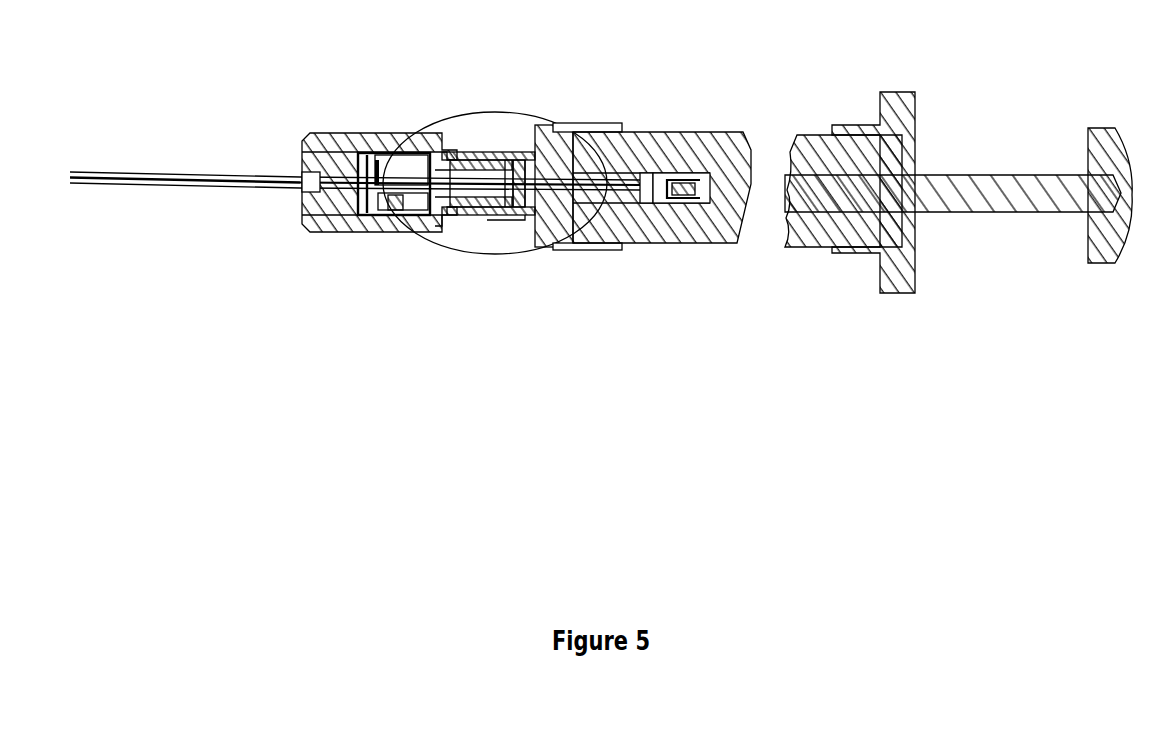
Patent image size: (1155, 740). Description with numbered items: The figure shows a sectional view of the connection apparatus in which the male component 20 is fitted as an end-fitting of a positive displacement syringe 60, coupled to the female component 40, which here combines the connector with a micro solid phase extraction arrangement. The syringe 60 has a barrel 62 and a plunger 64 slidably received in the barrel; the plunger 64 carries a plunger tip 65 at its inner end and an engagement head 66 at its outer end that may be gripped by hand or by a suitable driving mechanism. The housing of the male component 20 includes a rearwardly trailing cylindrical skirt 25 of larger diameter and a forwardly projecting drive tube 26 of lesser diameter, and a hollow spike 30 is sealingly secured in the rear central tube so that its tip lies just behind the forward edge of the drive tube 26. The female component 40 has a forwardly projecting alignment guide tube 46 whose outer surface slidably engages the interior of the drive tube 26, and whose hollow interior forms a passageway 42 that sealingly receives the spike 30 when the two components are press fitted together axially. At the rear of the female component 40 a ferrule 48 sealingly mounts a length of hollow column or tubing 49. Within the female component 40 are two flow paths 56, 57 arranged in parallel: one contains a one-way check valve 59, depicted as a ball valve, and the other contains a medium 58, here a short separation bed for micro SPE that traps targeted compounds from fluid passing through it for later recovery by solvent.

The male component 20 is at (600, 101).
The cylindrical skirt 25 is at (607, 252).
The drive tube 26 is at (490, 220).
The hollow spike 30 is at (600, 198).
The female component 40 is at (306, 103).
The passageway 42 is at (478, 178).
The alignment guide tube 46 is at (464, 170).
The rear ferrule 48 is at (323, 202).
The hollow column or tubing 49 is at (197, 188).
The flow path 56 is at (395, 207).
The flow path 57 is at (371, 163).
The medium 58 is at (407, 163).
The one-way check valve 59 is at (390, 200).
The positive displacement syringe 60 is at (700, 232).
The barrel 62 is at (817, 148).
The plunger 64 is at (977, 203).
The plunger tip 65 is at (666, 205).
The engagement head 66 is at (1103, 264).